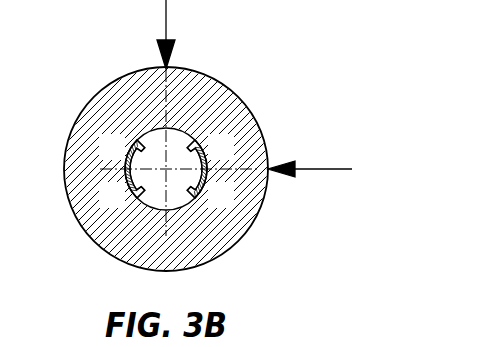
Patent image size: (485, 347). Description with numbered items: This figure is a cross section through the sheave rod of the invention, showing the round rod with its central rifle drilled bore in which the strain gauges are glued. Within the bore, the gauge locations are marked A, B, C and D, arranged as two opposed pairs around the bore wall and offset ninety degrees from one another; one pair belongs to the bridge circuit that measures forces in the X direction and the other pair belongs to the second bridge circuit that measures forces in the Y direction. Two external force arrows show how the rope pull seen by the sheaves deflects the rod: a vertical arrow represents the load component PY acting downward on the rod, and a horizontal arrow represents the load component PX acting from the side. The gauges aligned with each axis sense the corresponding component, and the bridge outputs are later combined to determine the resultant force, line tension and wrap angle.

The strain gauge position A is at (207, 166).
The strain gauge position B is at (124, 166).
The strain gauge position C is at (124, 174).
The strain gauge position D is at (207, 174).
The load component Py PY is at (180, 34).
The load component Px PX is at (310, 186).